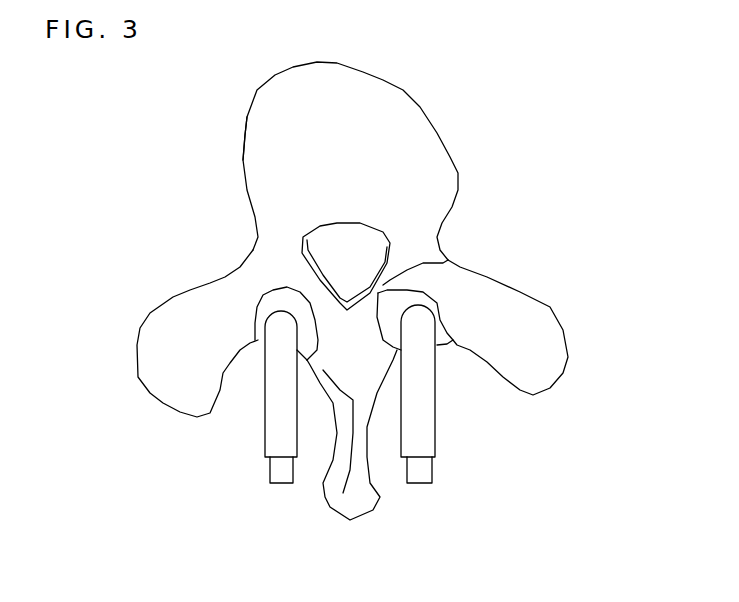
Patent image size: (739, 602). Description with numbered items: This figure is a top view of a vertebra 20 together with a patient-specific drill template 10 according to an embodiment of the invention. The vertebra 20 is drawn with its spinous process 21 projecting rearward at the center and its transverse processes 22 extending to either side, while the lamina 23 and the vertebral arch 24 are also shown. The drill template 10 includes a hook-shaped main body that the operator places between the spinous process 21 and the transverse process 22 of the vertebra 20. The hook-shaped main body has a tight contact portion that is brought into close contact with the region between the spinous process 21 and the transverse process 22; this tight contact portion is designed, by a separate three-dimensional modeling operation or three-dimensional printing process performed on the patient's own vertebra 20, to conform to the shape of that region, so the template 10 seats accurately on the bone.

The patient-specific drill template 10 is at (243, 445).
The vertebra 20 is at (543, 288).
The spinous process 21 is at (350, 520).
The transverse process 22 is at (163, 393).
The lamina 23 is at (383, 282).
The vertebral arch 24 is at (273, 243).